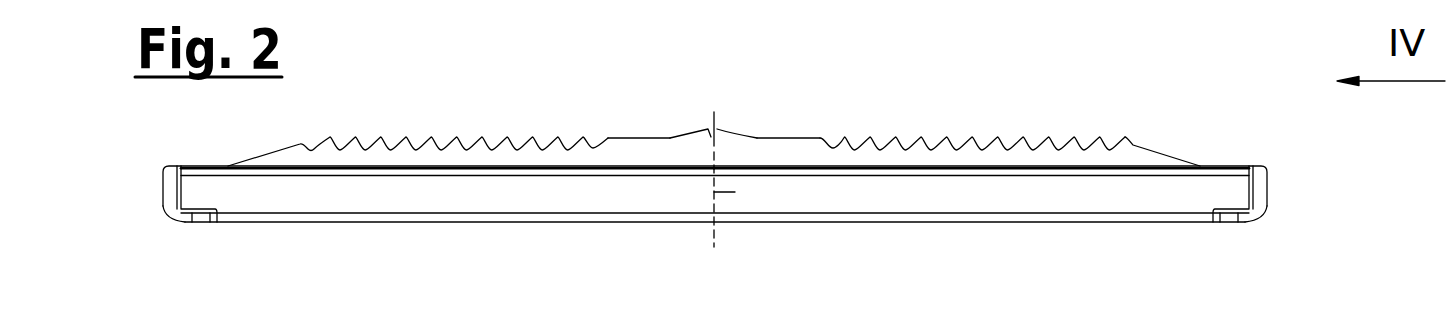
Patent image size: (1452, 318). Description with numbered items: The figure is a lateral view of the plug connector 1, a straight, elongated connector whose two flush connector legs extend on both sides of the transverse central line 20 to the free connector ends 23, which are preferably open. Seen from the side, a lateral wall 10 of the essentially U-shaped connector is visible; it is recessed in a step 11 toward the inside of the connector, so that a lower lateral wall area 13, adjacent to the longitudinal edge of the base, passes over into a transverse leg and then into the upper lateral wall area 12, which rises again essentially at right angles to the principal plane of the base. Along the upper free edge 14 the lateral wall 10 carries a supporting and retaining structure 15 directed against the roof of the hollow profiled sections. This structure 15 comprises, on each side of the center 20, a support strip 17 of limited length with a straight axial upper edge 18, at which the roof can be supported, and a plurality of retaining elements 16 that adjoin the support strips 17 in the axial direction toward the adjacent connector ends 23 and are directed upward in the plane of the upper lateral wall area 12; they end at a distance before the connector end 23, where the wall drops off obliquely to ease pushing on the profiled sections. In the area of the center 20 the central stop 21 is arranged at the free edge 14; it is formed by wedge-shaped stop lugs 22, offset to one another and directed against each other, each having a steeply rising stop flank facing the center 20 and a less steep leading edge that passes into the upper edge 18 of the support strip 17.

The plug connector 1 is at (1228, 136).
The lateral walls 10 is at (446, 191).
The step 11 is at (1078, 165).
The upper lateral wall area 12 is at (379, 165).
The lower lateral wall area 13 is at (928, 193).
The upper free edge 14 is at (1135, 146).
The supporting and retaining structure 15 is at (904, 116).
The retaining elements 16 is at (555, 138).
The support strip 17 is at (642, 142).
The upper edge 18 is at (795, 138).
The transverse central line 20 is at (735, 192).
The central stop 21 is at (703, 110).
The stop lugs 22 is at (730, 133).
The connector ends 23 is at (149, 176).